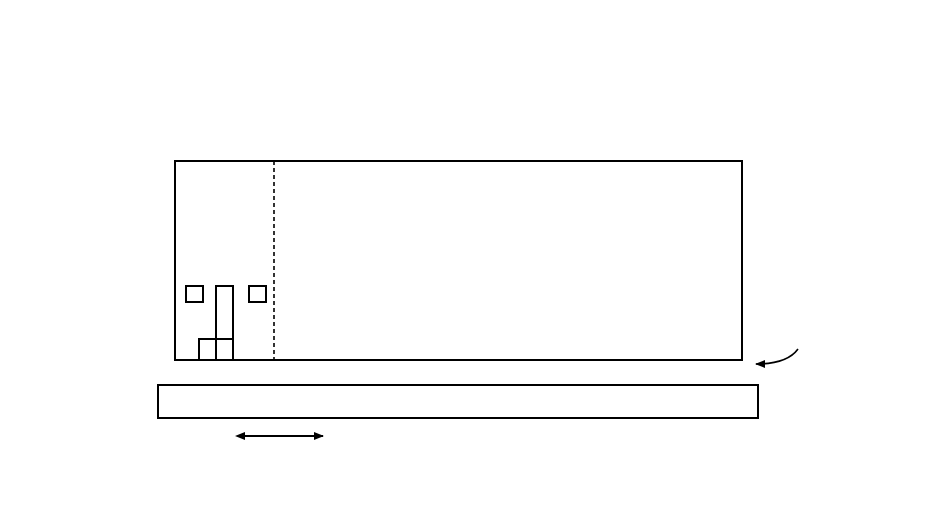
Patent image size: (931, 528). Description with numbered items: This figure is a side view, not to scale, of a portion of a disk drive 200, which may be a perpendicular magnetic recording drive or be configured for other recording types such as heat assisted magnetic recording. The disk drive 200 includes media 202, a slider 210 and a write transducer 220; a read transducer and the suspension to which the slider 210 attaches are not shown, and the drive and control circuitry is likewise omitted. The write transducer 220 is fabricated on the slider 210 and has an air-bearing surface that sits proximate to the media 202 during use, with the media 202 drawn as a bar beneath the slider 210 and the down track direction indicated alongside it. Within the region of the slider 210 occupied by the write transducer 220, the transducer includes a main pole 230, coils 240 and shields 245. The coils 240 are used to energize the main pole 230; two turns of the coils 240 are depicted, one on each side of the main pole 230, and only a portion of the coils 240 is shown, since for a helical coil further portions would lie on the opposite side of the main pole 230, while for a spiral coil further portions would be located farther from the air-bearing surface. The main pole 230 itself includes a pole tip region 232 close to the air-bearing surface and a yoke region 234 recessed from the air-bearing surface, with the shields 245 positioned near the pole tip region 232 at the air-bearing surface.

The disk drive 200 is at (429, 64).
The media 202 is at (158, 418).
The slider 210 is at (743, 226).
The write transducer 220 is at (275, 219).
The main pole 230 is at (223, 286).
The pole tip region 232 is at (208, 352).
The yoke region 234 is at (205, 318).
The coils 240 is at (258, 286).
The shields 245 is at (212, 360).